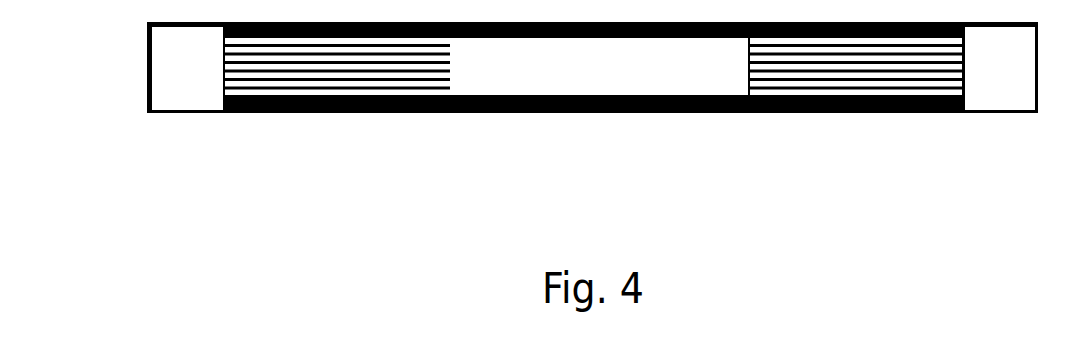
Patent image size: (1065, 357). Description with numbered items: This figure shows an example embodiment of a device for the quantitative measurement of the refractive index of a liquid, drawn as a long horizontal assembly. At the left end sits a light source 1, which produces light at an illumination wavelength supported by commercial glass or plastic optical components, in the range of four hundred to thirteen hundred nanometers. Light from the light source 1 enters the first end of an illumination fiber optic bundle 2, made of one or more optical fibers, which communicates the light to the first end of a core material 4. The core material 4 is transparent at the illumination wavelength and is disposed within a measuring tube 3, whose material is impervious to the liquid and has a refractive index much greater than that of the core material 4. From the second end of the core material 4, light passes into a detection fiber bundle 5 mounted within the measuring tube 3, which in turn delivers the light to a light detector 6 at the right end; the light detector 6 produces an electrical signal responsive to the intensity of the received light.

The light source 1 is at (160, 113).
The illumination fiber optic bundle 2 is at (297, 78).
The measuring tube 3 is at (425, 113).
The core material 4 is at (560, 77).
The detection fiber bundle 5 is at (837, 78).
The light detector 6 is at (998, 75).